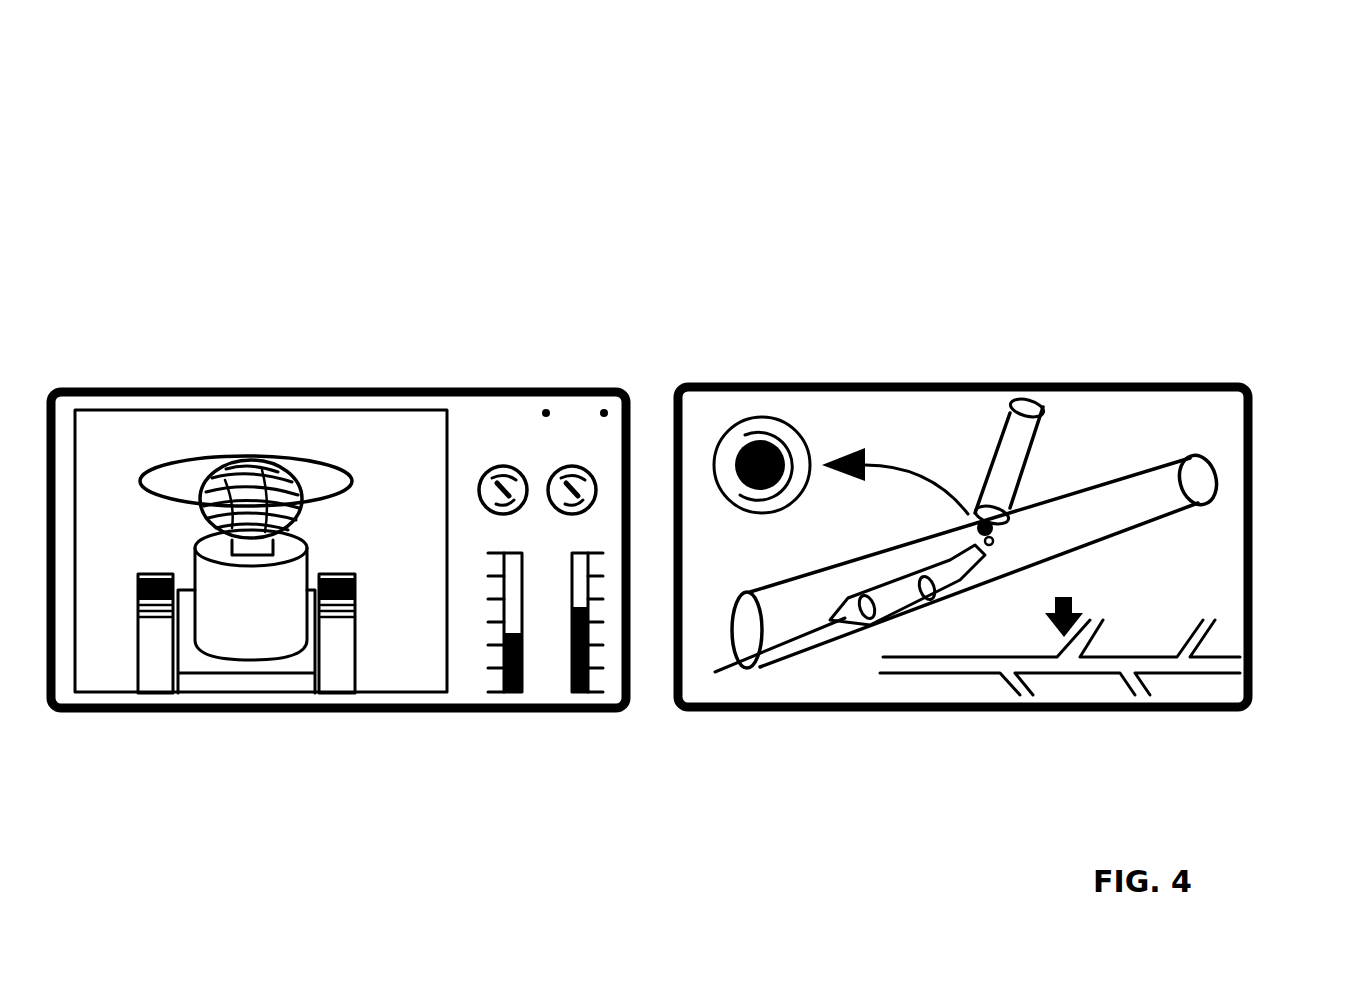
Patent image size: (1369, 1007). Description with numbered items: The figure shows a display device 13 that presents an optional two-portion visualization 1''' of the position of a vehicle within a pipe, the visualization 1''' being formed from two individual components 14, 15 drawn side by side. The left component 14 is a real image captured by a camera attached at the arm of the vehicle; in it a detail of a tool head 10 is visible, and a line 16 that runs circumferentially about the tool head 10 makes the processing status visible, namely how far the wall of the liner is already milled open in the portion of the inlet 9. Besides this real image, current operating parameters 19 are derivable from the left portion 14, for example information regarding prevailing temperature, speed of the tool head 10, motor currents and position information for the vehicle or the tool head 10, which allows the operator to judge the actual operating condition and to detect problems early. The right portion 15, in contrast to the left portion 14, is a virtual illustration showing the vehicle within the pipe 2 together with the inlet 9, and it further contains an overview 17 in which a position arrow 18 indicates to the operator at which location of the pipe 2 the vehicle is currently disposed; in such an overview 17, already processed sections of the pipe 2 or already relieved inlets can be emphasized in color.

The visualization 1''' is at (708, 439).
The display device 13 is at (658, 305).
The left component 14 is at (302, 310).
The tool head 10 is at (246, 465).
The line 16 is at (330, 462).
The operating parameters 19 is at (534, 340).
The right component 15 is at (987, 310).
The pipe 2 is at (790, 608).
The inlet 9 is at (1020, 441).
The overview 17 is at (1168, 580).
The position arrow 18 is at (1073, 632).